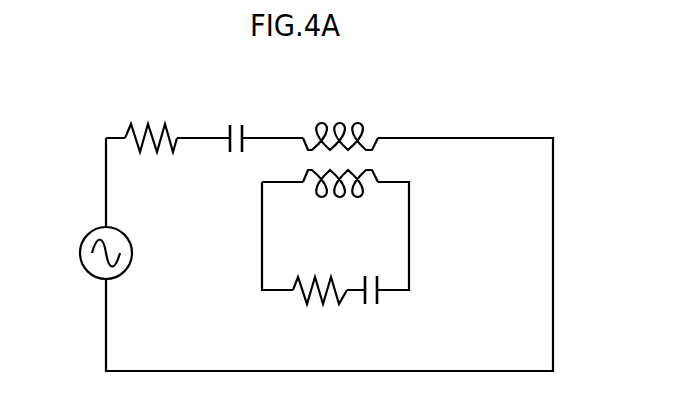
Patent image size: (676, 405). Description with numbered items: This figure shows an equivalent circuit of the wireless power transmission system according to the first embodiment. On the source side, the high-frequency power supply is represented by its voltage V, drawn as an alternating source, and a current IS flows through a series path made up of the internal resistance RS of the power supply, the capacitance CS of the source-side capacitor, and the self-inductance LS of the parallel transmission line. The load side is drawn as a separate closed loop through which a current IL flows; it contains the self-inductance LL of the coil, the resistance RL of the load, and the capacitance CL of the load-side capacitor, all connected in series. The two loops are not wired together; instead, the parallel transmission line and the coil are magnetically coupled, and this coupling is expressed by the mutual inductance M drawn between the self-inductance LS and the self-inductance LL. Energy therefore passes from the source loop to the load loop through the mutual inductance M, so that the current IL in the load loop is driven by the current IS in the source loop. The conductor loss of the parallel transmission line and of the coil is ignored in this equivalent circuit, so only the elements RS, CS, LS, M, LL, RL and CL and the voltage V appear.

The voltage V is at (64, 148).
The internal resistance RS is at (151, 160).
The capacitance CS is at (240, 161).
The self-inductance LS is at (340, 111).
The source current IS is at (237, 106).
The mutual inductance M is at (355, 158).
The self-inductance LL is at (340, 206).
The resistance RL is at (320, 314).
The capacitance CL is at (379, 313).
The load current IL is at (248, 220).